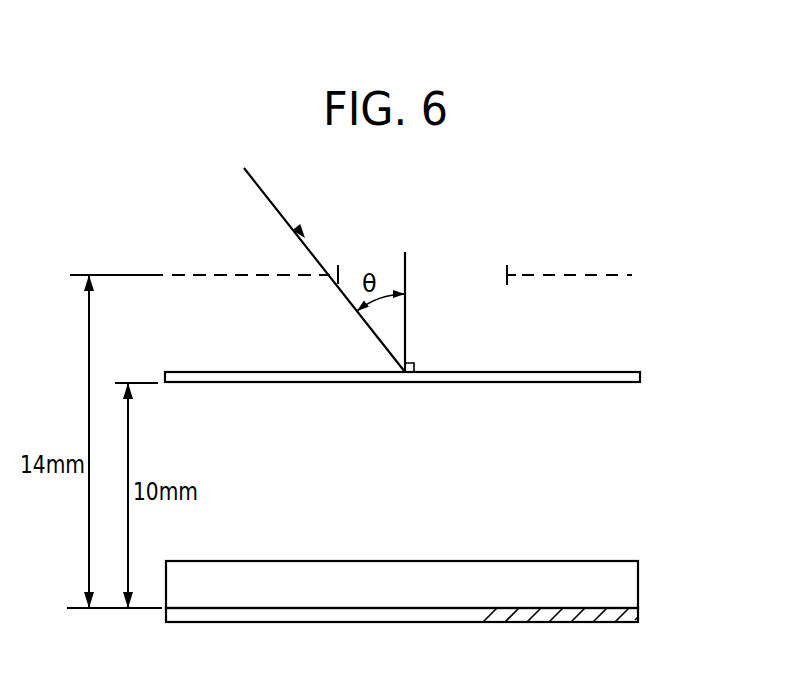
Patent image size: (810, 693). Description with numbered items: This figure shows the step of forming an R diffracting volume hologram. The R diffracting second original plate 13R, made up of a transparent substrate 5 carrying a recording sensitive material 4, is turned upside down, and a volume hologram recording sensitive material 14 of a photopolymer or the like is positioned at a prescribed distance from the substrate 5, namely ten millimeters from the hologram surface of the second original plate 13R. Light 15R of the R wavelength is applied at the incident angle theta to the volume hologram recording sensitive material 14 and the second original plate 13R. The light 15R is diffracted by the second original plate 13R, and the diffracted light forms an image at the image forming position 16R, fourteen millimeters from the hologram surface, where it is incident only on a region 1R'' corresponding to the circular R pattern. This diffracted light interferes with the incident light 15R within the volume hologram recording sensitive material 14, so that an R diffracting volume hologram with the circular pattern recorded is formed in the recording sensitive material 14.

The light of the R wavelength 15R is at (270, 200).
The region corresponding to the circular R pattern 1R'' is at (421, 226).
The image forming position 16R is at (583, 276).
The volume hologram recording sensitive material 14 is at (640, 376).
The transparent substrate 5 is at (638, 573).
The recording sensitive material 4 is at (435, 617).
The R diffracting second original plate 13R is at (470, 594).